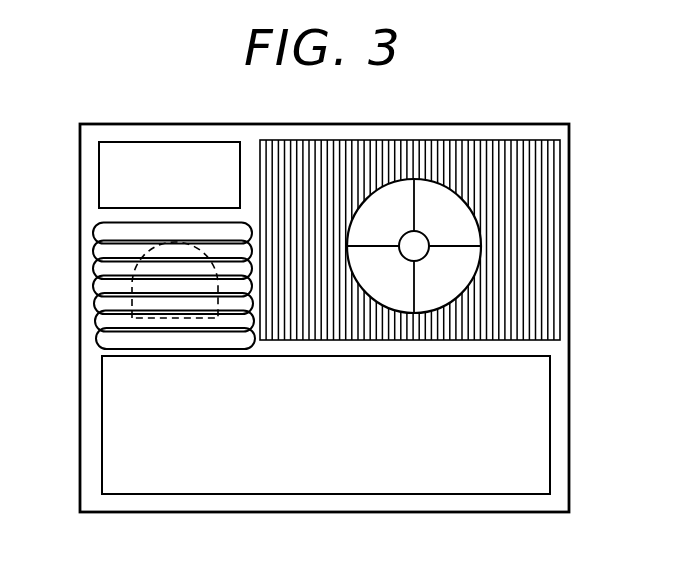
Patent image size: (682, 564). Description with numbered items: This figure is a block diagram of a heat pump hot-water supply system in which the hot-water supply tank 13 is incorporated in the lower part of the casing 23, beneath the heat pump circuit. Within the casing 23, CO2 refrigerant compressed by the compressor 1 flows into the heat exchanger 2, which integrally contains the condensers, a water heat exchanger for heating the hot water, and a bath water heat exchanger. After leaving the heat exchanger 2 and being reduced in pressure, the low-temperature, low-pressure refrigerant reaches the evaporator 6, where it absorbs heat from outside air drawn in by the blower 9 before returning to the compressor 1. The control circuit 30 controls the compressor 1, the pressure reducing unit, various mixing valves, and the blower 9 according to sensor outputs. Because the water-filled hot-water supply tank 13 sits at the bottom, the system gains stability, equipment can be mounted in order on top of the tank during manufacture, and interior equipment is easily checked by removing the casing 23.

The compressor 1 is at (130, 300).
The heat exchanger 2 is at (102, 251).
The evaporator 6 is at (538, 192).
The blower 9 is at (472, 257).
The hot-water supply tank 13 is at (538, 432).
The casing 23 is at (563, 378).
The control circuit 30 is at (110, 163).